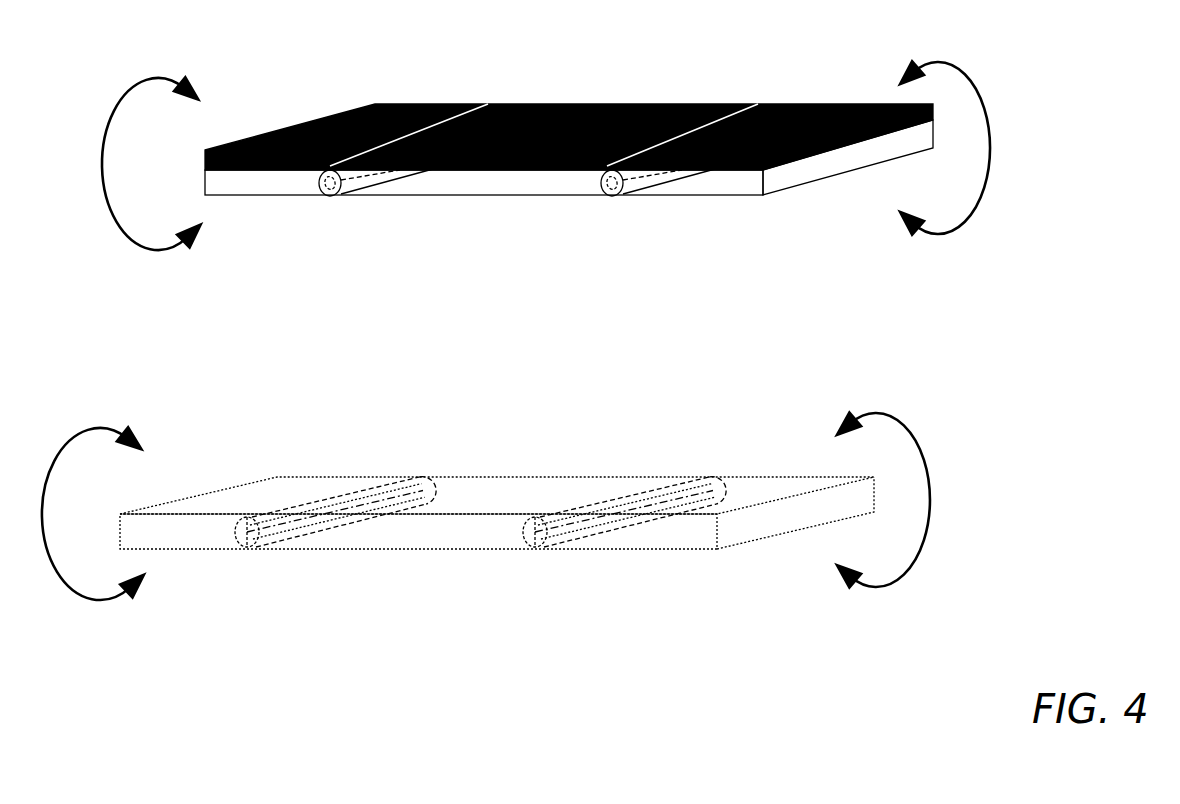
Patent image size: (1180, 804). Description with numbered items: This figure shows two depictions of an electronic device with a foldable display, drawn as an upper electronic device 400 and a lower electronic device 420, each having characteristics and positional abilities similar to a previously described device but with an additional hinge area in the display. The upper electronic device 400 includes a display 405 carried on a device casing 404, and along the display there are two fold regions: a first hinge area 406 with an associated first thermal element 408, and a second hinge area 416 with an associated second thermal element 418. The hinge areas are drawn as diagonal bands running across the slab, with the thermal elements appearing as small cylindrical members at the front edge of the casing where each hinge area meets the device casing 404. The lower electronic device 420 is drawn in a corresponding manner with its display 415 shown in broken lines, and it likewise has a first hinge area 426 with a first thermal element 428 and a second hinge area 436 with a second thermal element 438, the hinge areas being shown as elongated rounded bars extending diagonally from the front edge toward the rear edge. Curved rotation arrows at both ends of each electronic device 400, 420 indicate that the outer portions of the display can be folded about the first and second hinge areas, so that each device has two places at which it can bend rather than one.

The electronic device 400 is at (546, 143).
The display 405 is at (538, 105).
The device casing 404 is at (246, 189).
The first hinge area 406 is at (360, 205).
The first thermal element 408 is at (326, 185).
The second hinge area 416 is at (640, 204).
The second thermal element 418 is at (609, 185).
The electronic device 420 is at (486, 491).
The display 415 is at (516, 477).
The first hinge area 426 is at (319, 530).
The first thermal element 428 is at (243, 536).
The second hinge area 436 is at (608, 530).
The second thermal element 438 is at (531, 536).